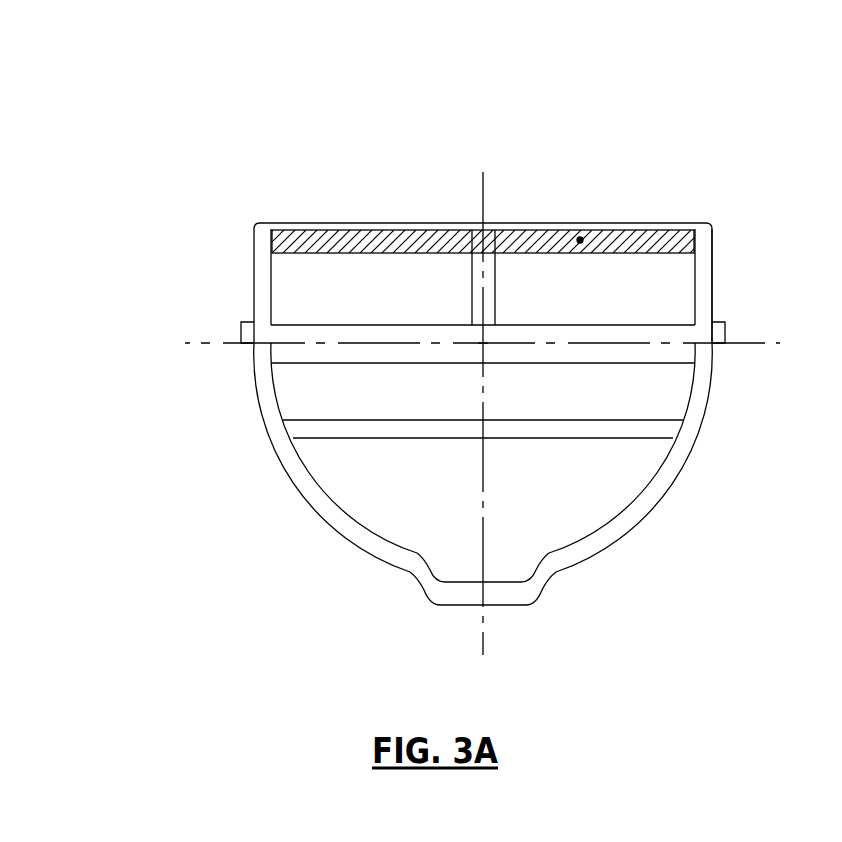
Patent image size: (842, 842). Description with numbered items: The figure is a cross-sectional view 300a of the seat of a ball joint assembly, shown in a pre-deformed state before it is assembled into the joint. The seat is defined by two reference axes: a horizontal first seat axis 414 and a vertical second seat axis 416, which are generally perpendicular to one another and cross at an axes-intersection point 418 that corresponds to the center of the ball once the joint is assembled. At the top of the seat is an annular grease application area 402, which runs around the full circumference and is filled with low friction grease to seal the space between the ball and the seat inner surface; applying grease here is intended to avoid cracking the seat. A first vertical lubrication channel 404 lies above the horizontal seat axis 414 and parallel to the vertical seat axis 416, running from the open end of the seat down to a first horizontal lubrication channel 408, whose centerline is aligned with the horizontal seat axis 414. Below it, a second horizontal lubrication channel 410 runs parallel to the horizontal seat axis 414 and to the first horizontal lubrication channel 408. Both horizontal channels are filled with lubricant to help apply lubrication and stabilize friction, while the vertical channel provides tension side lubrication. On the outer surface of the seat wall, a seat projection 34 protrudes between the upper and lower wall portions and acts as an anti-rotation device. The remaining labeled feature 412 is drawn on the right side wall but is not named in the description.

The cross-sectional view 300a is at (272, 126).
The annular grease application area 402 is at (258, 244).
The first vertical lubrication channel 404 is at (494, 252).
The first horizontal lubrication channel 408 is at (256, 326).
The seat projection 34 is at (724, 318).
The right side wall 412 is at (716, 275).
The second horizontal lubrication channel 410 is at (303, 430).
The first seat axis 414 is at (760, 348).
The second seat axis 416 is at (482, 193).
The axes-intersection point 418 is at (492, 352).